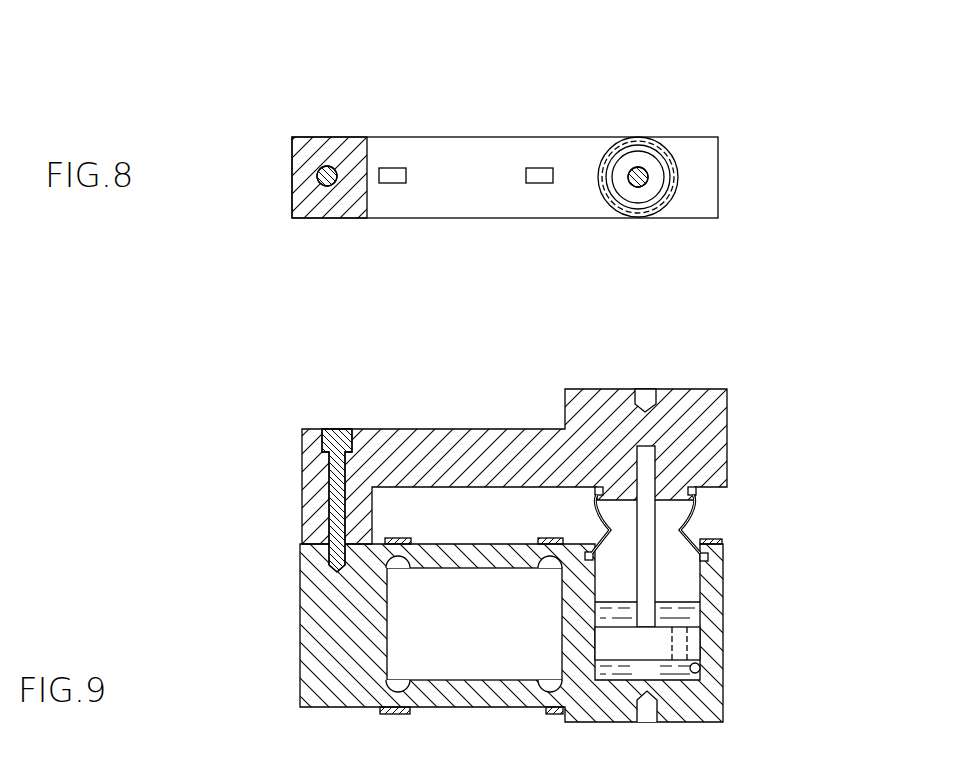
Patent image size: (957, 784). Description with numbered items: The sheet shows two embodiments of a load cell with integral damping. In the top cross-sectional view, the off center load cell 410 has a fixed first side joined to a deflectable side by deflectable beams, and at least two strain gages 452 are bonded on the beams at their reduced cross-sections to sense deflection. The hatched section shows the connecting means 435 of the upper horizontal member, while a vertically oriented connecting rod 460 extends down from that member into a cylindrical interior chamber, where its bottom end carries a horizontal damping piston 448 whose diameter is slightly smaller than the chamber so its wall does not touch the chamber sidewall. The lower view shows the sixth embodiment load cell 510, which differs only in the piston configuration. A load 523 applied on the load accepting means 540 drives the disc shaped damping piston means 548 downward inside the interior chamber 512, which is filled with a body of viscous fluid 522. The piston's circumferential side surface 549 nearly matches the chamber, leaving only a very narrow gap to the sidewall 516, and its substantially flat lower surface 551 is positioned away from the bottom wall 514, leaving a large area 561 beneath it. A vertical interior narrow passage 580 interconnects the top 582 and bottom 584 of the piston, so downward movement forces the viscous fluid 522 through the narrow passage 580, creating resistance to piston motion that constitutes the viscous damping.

In FIG. 8, the off center load cell 410 is at (645, 73).
In FIG. 8, the connecting means 435 is at (318, 182).
In FIG. 8, the strain gages 452 is at (539, 173).
In FIG. 8, the damping piston 448 is at (648, 198).
In FIG. 8, the connecting rod 460 is at (648, 176).
In FIG. 9, the load cell 510 is at (757, 312).
In FIG. 9, the load 523 is at (646, 376).
In FIG. 9, the load accepting means 540 is at (708, 389).
In FIG. 9, the interior chamber 512 is at (634, 583).
In FIG. 9, the damping piston means 548 is at (603, 643).
In FIG. 9, the viscous fluid 522 is at (695, 602).
In FIG. 9, the top of the damping piston 582 is at (695, 627).
In FIG. 9, the narrow passage 580 is at (680, 642).
In FIG. 9, the circumferential side surface 549 is at (703, 643).
In FIG. 9, the bottom wall 514 is at (612, 676).
In FIG. 9, the sidewall 516 is at (700, 667).
In FIG. 9, the lower surface 551 is at (600, 668).
In FIG. 9, the bottom of the damping piston 584 is at (637, 663).
In FIG. 9, the area 561 is at (682, 672).